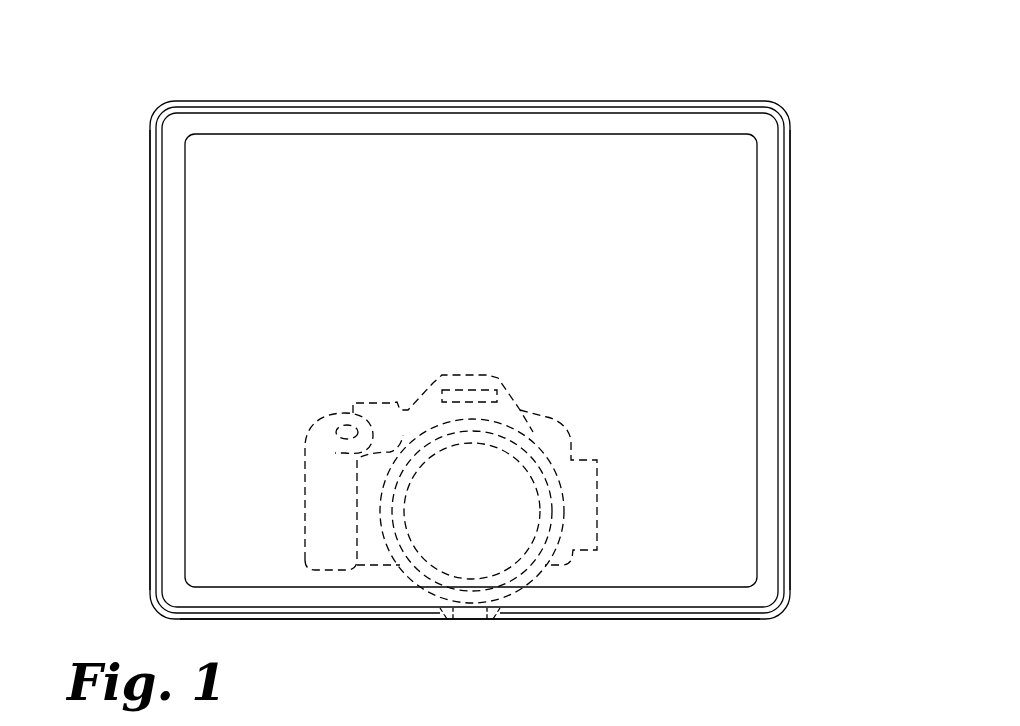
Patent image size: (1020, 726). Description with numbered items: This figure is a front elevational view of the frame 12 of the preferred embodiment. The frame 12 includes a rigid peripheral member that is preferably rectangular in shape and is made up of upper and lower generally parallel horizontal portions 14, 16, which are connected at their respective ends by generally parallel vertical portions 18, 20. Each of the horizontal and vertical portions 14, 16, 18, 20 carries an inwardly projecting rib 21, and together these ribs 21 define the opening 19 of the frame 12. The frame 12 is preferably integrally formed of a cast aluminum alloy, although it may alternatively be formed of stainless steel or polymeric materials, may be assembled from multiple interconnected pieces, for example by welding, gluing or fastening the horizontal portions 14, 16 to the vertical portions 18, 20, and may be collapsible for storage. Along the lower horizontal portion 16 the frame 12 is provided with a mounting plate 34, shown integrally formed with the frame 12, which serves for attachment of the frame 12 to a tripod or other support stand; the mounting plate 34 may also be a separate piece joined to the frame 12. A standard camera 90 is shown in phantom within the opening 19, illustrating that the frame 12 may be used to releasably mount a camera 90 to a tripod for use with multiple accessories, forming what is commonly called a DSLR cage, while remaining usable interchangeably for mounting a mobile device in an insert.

The frame 12 is at (146, 84).
The upper horizontal portion 14 is at (560, 108).
The lower horizontal portion 16 is at (547, 615).
The vertical portion 18 is at (155, 309).
The opening 19 is at (712, 565).
The vertical portion 20 is at (783, 318).
The inwardly projecting rib 21 is at (383, 127).
The mounting plate 34 is at (470, 611).
The camera 90 is at (320, 512).